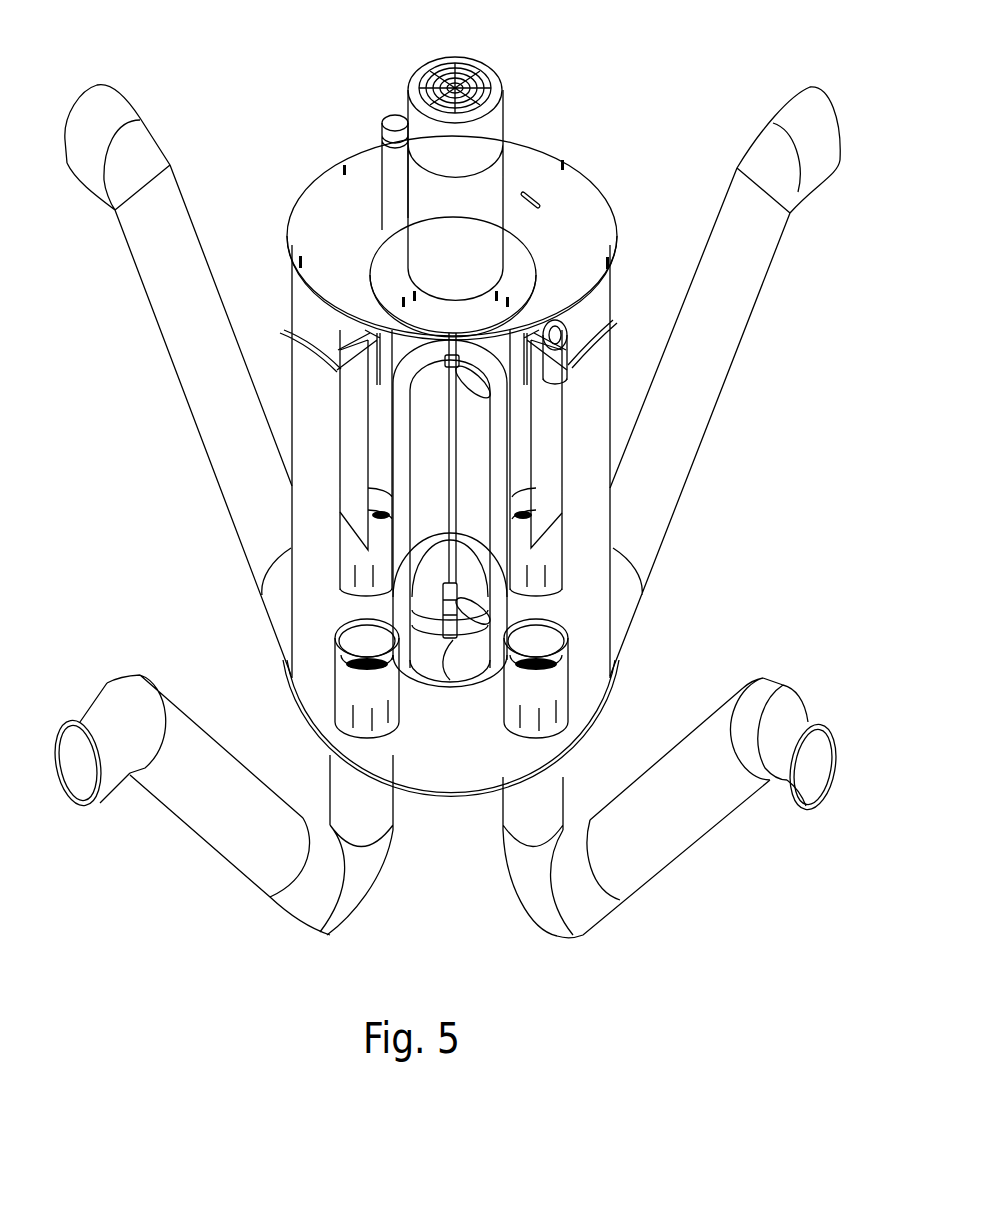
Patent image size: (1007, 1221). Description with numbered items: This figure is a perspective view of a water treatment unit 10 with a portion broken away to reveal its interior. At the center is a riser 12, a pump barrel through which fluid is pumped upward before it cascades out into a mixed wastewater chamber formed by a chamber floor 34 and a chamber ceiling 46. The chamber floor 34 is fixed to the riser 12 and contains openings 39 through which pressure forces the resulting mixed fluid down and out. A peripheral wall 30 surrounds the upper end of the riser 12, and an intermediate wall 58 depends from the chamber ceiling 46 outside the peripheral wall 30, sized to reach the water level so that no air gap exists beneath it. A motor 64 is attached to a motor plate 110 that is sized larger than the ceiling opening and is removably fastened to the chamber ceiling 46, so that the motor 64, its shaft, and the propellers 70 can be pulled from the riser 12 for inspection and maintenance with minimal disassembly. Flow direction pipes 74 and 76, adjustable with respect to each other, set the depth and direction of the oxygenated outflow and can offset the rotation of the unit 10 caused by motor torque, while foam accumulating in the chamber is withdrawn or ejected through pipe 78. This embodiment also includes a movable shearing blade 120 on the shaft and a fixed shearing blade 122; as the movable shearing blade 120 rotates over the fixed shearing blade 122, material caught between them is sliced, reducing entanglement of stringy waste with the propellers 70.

The water treatment unit 10 is at (582, 146).
The riser 12 is at (410, 552).
The peripheral wall 30 is at (337, 370).
The chamber floor 34 is at (416, 870).
The openings 39 is at (550, 642).
The chamber ceiling 46 is at (340, 237).
The intermediate wall 58 is at (550, 507).
The motor 64 is at (466, 57).
The propellers 70 is at (471, 377).
The flow direction pipe 74 is at (545, 810).
The flow direction pipe 76 is at (708, 763).
The pipe 78 is at (558, 333).
The motor plate 110 is at (388, 250).
The movable shearing blade 120 is at (453, 687).
The fixed shearing blade 122 is at (487, 778).